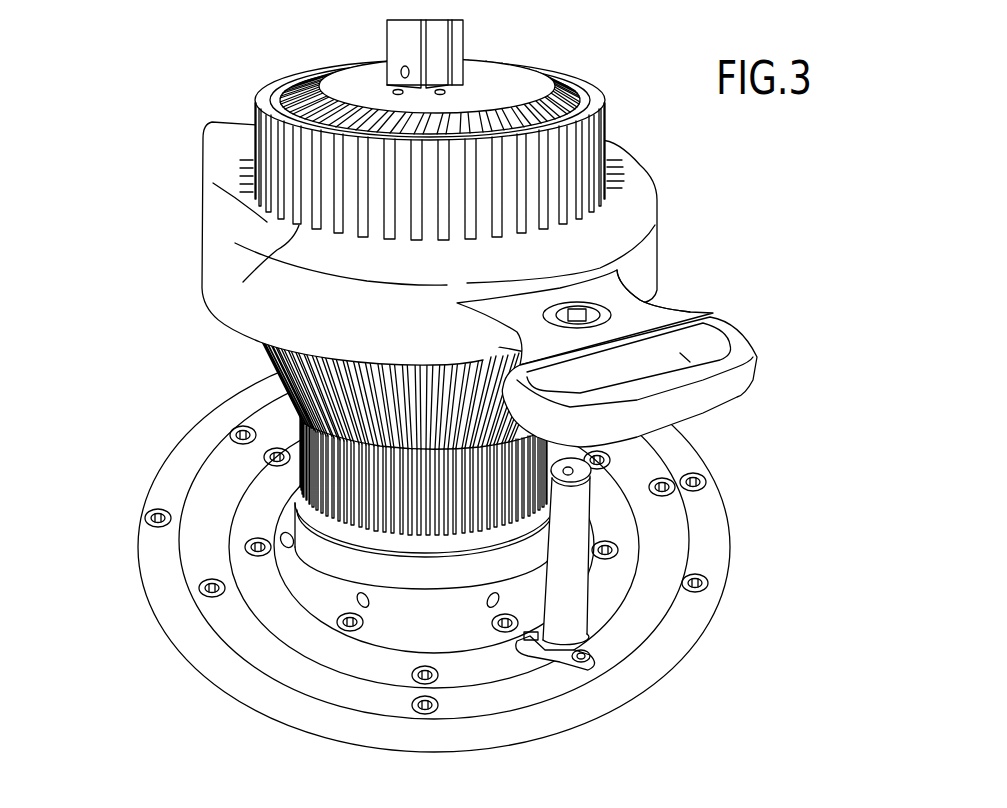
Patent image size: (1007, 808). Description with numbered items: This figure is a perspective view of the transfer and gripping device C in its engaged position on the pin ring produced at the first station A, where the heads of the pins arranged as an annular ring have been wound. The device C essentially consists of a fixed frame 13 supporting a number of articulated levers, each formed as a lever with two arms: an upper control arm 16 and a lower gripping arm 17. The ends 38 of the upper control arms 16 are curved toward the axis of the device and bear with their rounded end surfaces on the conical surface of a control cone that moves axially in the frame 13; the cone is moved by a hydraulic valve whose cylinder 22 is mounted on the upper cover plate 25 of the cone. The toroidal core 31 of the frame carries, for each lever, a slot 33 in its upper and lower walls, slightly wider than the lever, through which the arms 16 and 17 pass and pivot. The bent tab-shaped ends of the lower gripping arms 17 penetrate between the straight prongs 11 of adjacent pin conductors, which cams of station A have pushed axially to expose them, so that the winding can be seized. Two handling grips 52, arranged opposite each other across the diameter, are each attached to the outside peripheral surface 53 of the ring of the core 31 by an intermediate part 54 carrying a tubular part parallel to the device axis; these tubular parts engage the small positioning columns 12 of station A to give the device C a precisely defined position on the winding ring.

The straight prongs 11 is at (380, 506).
The small positioning columns 12 is at (573, 580).
The fixed frame 13 is at (192, 278).
The upper control arms 16 is at (267, 159).
The lower gripping arms 17 is at (267, 378).
The cylinder 22 is at (463, 36).
The upper cover plate 25 is at (500, 90).
The toroidal core 31 is at (657, 213).
The slot 33 is at (240, 228).
The ends of the upper control arms 38 is at (283, 88).
The handling grips 52 is at (720, 360).
The outside peripheral surface 53 is at (637, 270).
The intermediate part 54 is at (677, 303).
The first station A is at (722, 467).
The transfer device C is at (665, 156).